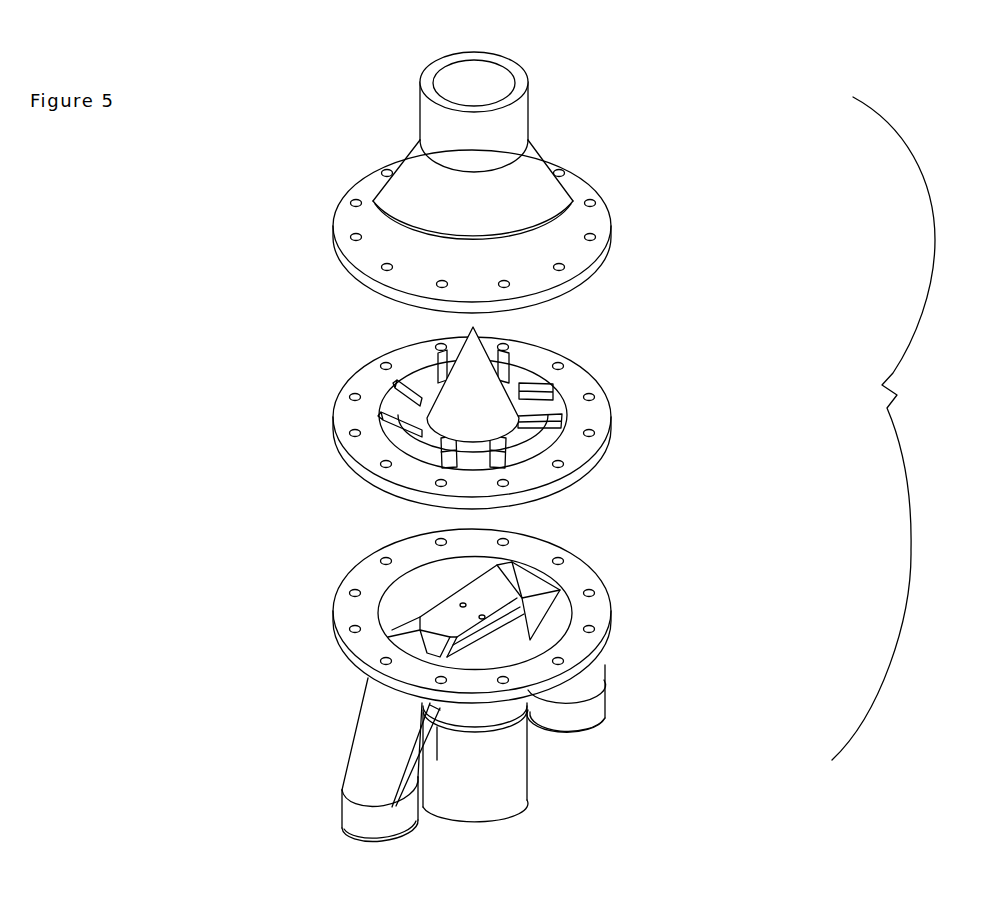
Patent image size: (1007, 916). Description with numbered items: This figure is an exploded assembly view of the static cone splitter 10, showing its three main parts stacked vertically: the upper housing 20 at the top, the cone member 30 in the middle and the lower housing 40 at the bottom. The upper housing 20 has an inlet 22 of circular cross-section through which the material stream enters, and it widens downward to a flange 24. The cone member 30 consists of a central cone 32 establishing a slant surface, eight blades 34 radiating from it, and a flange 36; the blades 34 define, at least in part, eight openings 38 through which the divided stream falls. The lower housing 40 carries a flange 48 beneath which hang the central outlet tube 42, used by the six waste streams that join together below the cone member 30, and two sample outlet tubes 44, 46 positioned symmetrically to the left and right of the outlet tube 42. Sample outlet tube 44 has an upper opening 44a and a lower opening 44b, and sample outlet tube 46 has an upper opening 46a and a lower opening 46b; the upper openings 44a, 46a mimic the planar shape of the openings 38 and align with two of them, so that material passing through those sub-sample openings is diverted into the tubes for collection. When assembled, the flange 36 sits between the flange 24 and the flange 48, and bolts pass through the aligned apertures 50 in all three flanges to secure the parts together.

The static cone splitter 10 is at (894, 428).
The upper housing 20 is at (642, 143).
The inlet 22 is at (503, 68).
The flange 24 is at (596, 222).
The cone member 30 is at (664, 385).
The cone 32 is at (463, 402).
The blades 34 is at (537, 435).
The flange 36 is at (576, 375).
The openings 38 is at (428, 400).
The lower housing 40 is at (684, 704).
The outlet tube 42 is at (483, 788).
The sample outlet tube 44 is at (370, 767).
The upper opening 44a is at (404, 637).
The lower opening 44b is at (371, 847).
The sample outlet tube 46 is at (605, 673).
The upper opening 46a is at (526, 574).
The lower opening 46b is at (583, 744).
The flange 48 is at (596, 607).
The apertures 50 is at (562, 166).